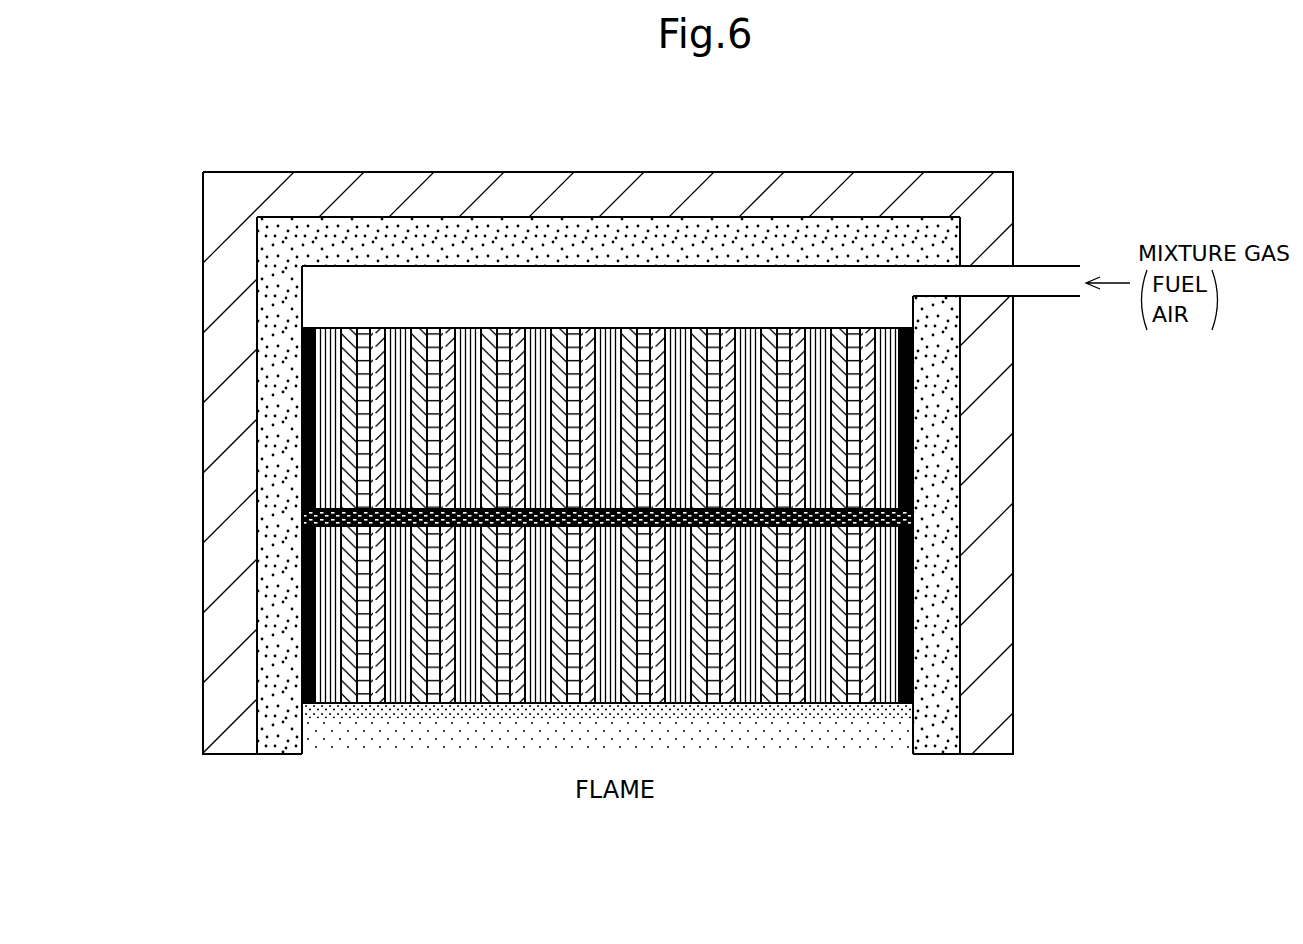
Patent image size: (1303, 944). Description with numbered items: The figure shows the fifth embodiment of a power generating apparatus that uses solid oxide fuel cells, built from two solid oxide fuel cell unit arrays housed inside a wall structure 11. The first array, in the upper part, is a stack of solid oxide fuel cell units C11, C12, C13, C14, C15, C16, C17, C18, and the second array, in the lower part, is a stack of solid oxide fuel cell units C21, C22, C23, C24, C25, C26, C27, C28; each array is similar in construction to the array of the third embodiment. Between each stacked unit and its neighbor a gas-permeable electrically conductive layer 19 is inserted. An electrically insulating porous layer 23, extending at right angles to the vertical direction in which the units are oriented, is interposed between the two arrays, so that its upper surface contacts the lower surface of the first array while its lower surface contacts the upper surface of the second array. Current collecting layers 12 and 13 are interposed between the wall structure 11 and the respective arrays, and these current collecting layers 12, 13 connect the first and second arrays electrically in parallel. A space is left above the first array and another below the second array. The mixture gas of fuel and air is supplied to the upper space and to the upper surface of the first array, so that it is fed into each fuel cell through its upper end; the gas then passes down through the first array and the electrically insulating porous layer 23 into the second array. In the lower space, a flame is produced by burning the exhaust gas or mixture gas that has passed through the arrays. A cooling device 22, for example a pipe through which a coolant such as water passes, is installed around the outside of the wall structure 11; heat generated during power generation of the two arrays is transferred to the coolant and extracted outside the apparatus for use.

The wall structure 11 is at (942, 752).
The current collecting layer 12 is at (302, 604).
The current collecting layer 13 is at (915, 584).
The gas-permeable electrically conductive layer 19 is at (538, 328).
The cooling device 22 is at (1000, 613).
The electrically insulating porous layer 23 is at (915, 516).
The solid oxide fuel cell unit C11 is at (338, 312).
The solid oxide fuel cell unit C12 is at (408, 312).
The solid oxide fuel cell unit C13 is at (478, 312).
The solid oxide fuel cell unit C14 is at (548, 312).
The solid oxide fuel cell unit C15 is at (618, 312).
The solid oxide fuel cell unit C16 is at (688, 312).
The solid oxide fuel cell unit C17 is at (758, 312).
The solid oxide fuel cell unit C18 is at (828, 312).
The solid oxide fuel cell unit C21 is at (338, 706).
The solid oxide fuel cell unit C22 is at (408, 706).
The solid oxide fuel cell unit C23 is at (478, 706).
The solid oxide fuel cell unit C24 is at (548, 706).
The solid oxide fuel cell unit C25 is at (618, 706).
The solid oxide fuel cell unit C26 is at (688, 706).
The solid oxide fuel cell unit C27 is at (758, 706).
The solid oxide fuel cell unit C28 is at (828, 706).